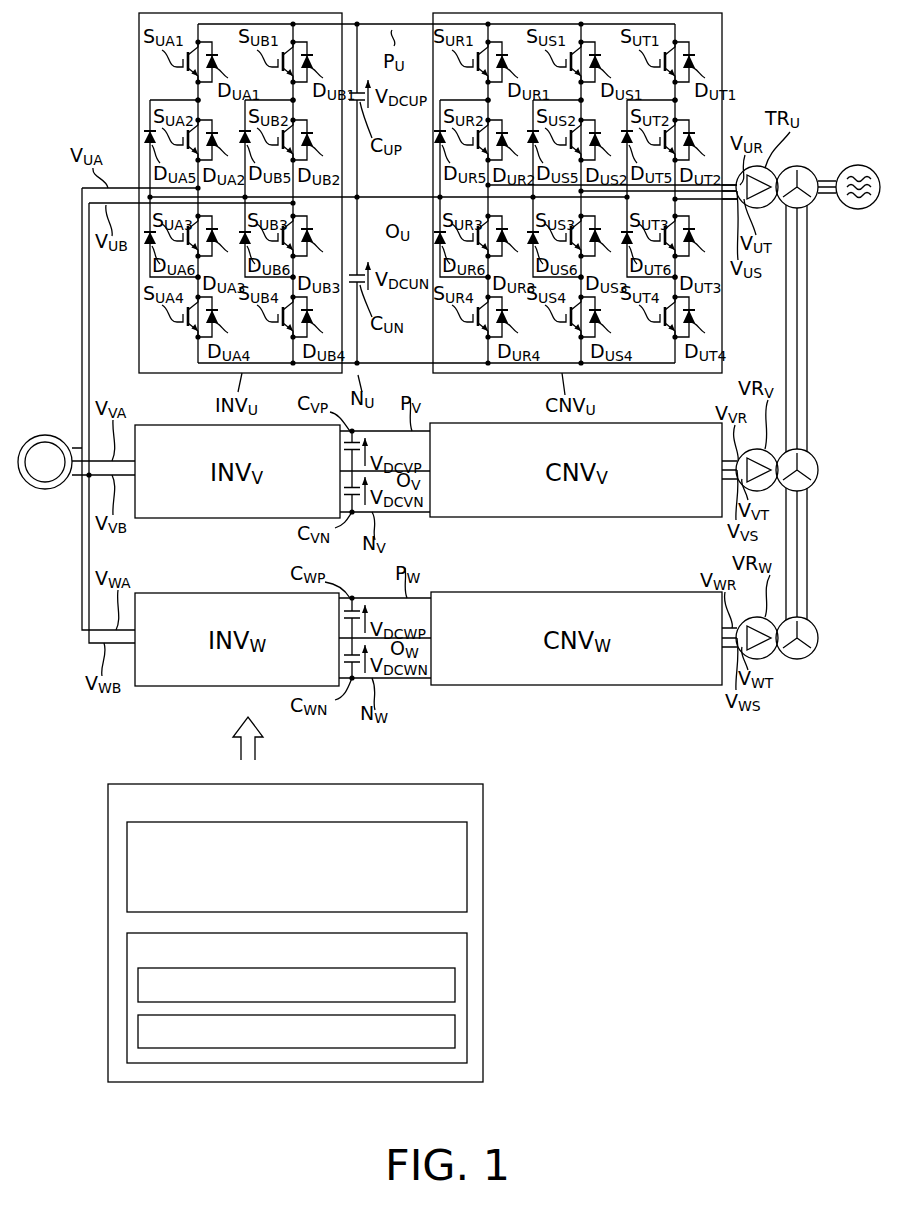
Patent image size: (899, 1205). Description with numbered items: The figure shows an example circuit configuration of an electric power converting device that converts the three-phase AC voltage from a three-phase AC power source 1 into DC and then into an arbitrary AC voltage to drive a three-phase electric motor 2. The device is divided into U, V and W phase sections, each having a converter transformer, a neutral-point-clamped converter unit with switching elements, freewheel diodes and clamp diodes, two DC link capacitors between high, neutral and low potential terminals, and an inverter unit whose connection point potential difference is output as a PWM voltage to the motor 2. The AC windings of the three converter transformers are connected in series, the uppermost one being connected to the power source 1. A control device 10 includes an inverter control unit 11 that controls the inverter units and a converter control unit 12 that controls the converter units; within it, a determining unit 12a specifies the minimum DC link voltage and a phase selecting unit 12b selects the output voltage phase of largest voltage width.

The three-phase AC power source 1 is at (858, 165).
The three-phase electric motor 2 is at (45, 435).
The control device 10 is at (455, 784).
The inverter control unit 11 is at (467, 862).
The converter control unit 12 is at (467, 950).
The determining unit 12a is at (455, 985).
The phase selecting unit 12b is at (455, 1030).